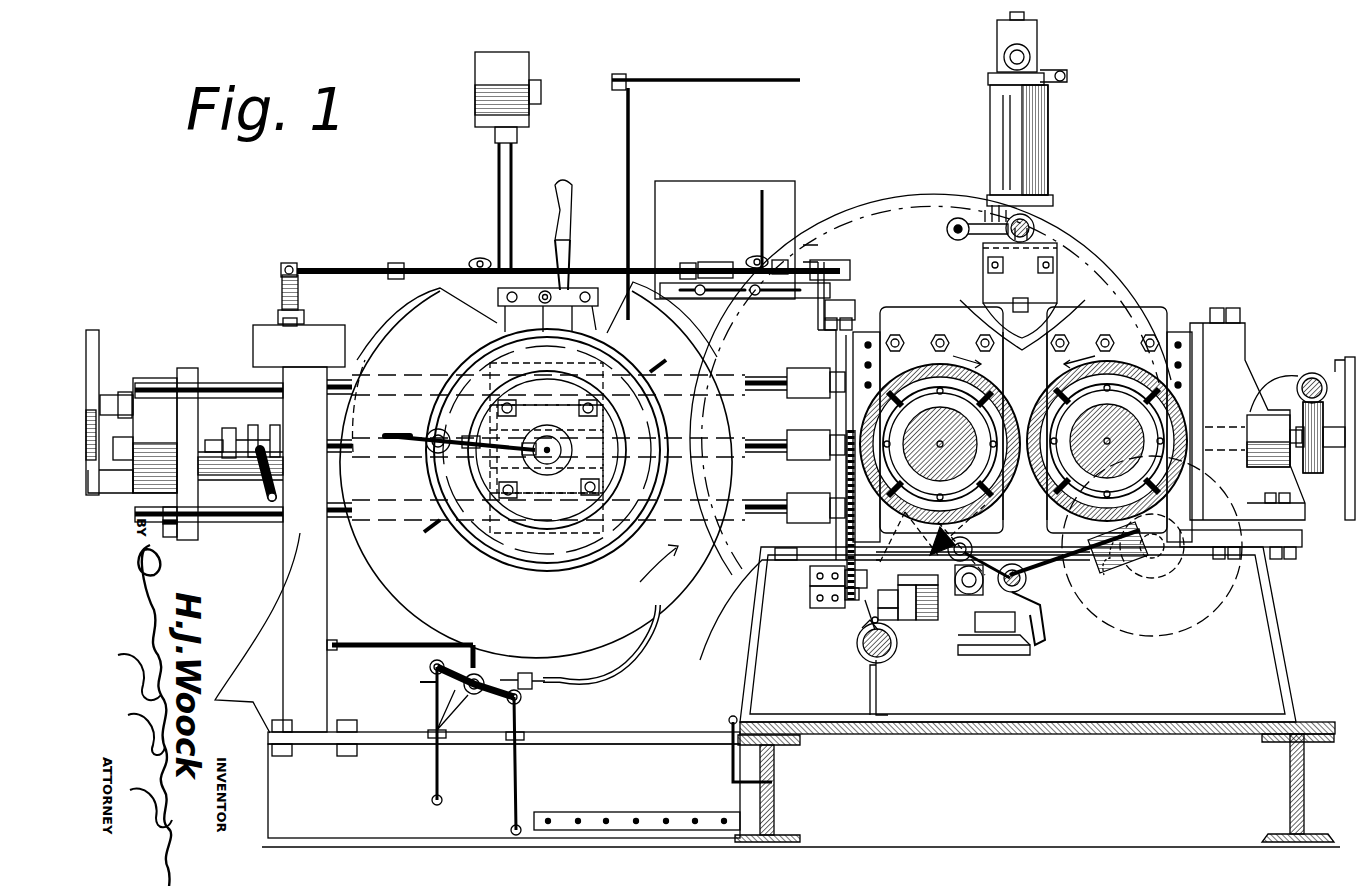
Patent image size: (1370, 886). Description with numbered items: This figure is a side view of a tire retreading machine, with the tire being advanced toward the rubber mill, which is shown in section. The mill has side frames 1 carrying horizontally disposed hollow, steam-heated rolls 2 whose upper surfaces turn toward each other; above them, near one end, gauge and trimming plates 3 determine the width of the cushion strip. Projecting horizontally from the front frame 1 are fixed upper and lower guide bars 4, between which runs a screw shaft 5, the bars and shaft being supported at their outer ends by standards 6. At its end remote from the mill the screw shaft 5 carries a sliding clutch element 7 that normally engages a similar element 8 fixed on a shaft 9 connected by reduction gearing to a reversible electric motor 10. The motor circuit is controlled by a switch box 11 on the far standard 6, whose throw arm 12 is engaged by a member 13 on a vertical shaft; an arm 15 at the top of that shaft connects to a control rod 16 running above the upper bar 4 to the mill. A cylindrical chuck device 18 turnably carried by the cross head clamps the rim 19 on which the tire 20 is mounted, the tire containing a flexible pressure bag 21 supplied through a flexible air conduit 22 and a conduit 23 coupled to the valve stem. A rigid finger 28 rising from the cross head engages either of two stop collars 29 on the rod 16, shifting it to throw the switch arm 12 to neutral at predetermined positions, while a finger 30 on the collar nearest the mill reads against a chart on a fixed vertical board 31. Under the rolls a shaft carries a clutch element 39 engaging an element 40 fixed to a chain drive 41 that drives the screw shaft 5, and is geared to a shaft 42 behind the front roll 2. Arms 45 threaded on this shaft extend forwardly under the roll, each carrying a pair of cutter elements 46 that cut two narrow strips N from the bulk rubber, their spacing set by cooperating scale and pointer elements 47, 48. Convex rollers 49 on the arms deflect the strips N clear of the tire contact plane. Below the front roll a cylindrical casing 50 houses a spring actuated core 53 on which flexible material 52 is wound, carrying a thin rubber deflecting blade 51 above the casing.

The side frames 1 is at (745, 657).
The rolls 2 is at (895, 400).
The gauge and trimming plates 3 is at (985, 300).
The guide bars 4 is at (752, 378).
The screw shaft 5 is at (760, 442).
The standards 6 is at (300, 578).
The sliding clutch element 7 is at (242, 440).
The clutch element 8 is at (228, 440).
The shaft 9 is at (200, 442).
The reversible electric motor 10 is at (100, 335).
The switch box 11 is at (335, 338).
The throw arm 12 is at (283, 320).
The member 13 is at (288, 300).
The arm 15 is at (295, 268).
The control rod 16 is at (360, 268).
The cylindrical chuck device 18 is at (548, 545).
The rim 19 is at (485, 553).
The tire 20 is at (420, 564).
The flexible pressure bag 21 is at (478, 260).
The flexible air conduit 22 is at (635, 660).
The conduit 23 is at (497, 430).
The rigid finger 28 is at (605, 292).
The stop collars 29 is at (700, 270).
The finger 30 is at (770, 215).
The fixed vertical board 31 is at (700, 195).
The clutch element 39 is at (928, 595).
The cooperating clutch element 40 is at (880, 602).
The chain drive 41 is at (762, 551).
The shaft 42 is at (1070, 610).
The arms 45 is at (1115, 490).
The cutter elements 46 is at (962, 531).
The scale 47 is at (960, 655).
The pointer 48 is at (975, 640).
The rollers 49 is at (812, 588).
The cylindrical casing 50 is at (860, 650).
The rubber deflecting blade 51 is at (875, 620).
The flexible material 52 is at (890, 645).
The spring actuated core 53 is at (870, 660).
The narrow strips N is at (900, 531).